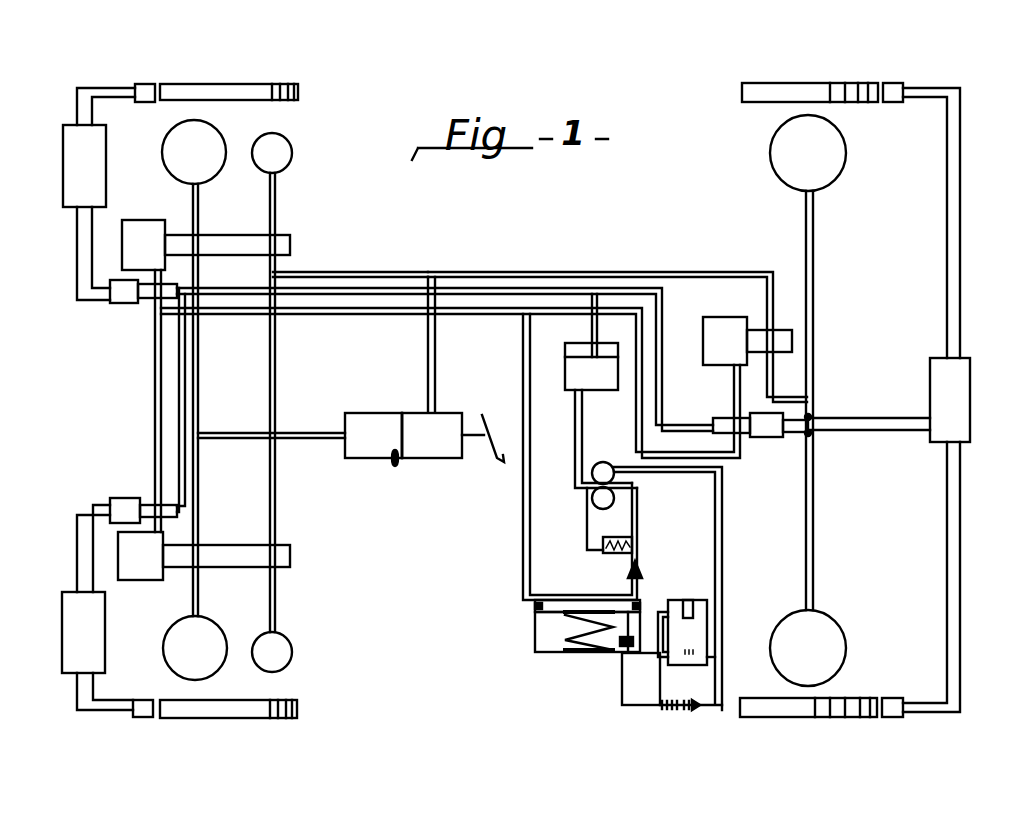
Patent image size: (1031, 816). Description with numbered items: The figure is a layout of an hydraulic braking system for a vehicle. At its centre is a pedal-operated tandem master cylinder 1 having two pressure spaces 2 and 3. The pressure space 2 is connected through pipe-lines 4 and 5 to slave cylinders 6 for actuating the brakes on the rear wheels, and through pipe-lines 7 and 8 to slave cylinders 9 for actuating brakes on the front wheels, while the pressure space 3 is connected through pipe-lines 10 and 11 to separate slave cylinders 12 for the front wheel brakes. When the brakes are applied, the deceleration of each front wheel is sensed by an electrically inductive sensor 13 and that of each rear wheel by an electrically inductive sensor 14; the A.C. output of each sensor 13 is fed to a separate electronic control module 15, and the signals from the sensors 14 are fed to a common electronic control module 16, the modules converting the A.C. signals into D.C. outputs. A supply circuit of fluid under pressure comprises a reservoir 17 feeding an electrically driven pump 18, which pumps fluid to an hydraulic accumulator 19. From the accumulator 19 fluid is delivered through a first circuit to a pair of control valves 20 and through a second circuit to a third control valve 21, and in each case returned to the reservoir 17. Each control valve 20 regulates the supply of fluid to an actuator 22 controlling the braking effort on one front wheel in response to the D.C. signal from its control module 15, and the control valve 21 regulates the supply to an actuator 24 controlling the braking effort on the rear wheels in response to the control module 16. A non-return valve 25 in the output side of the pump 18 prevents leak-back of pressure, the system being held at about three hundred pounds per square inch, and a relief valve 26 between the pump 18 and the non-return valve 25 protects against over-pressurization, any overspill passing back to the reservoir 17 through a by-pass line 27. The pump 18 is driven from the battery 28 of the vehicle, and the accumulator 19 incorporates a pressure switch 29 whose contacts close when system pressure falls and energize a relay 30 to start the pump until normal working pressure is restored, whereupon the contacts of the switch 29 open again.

The pedal-operated tandem master cylinder 1 is at (395, 465).
The pressure space 2 is at (435, 445).
The pressure space 3 is at (372, 442).
The pipe-line 4 is at (525, 272).
The pipe-line 5 is at (810, 273).
The slave cylinders 6 is at (843, 153).
The pipe-line 7 is at (373, 272).
The pipe-line 8 is at (277, 215).
The slave cylinders 9 is at (278, 155).
The pipe-line 10 is at (305, 432).
The pipe-line 11 is at (195, 390).
The slave cylinders 12 is at (198, 142).
The electrically inductive sensor 13 is at (305, 93).
The electrically inductive sensor 14 is at (875, 698).
The electronic control module 15 is at (77, 178).
The electronic control module 16 is at (952, 397).
The reservoir 17 is at (578, 375).
The electrically driven pump 18 is at (603, 477).
The hydraulic accumulator 19 is at (546, 632).
The control valve 20 is at (120, 296).
The third control valve 21 is at (765, 428).
The actuator 22 is at (140, 237).
The actuator 24 is at (728, 338).
The non-return valve 25 is at (640, 568).
The relief valve 26 is at (628, 540).
The chamber 27 is at (580, 525).
The battery 28 is at (633, 712).
The pressure switch 29 is at (622, 648).
The relay 30 is at (688, 612).